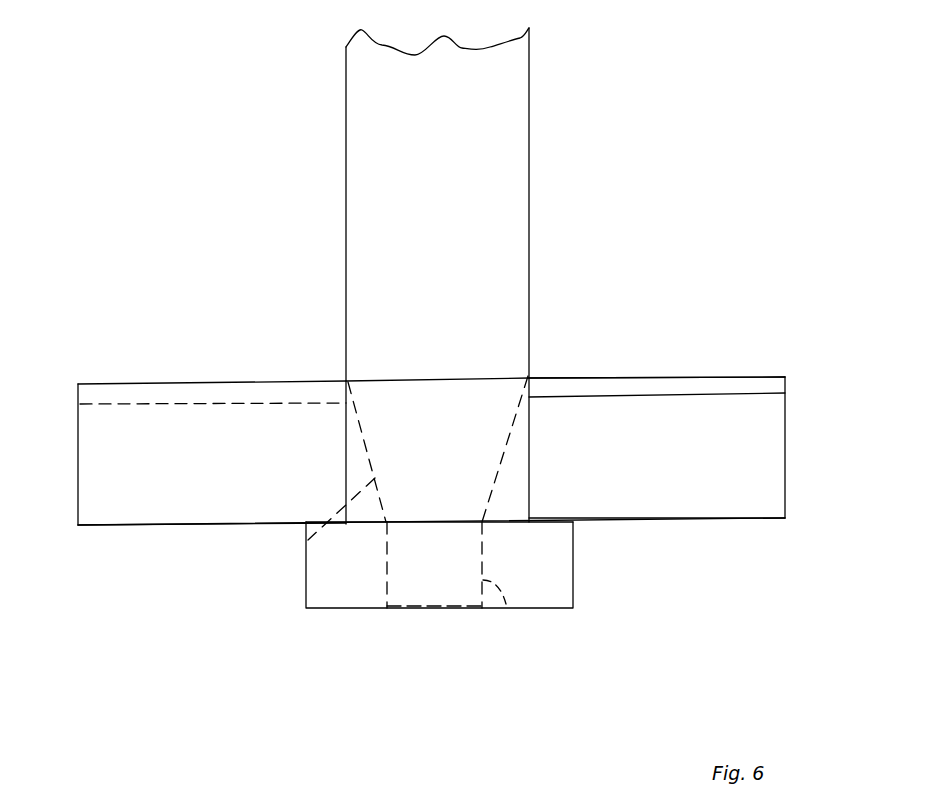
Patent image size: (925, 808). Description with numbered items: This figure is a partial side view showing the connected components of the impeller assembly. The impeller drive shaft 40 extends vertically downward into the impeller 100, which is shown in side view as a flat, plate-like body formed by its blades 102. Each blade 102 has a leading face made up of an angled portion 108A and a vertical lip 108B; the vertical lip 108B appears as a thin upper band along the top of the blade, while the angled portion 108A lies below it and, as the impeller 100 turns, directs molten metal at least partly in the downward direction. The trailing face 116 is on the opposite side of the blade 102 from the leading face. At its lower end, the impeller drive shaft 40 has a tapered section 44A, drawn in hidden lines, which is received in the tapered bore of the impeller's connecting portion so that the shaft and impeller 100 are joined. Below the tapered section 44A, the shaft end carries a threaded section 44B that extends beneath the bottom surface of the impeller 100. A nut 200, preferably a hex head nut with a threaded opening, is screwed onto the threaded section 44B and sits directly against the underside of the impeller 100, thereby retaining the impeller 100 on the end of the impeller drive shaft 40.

The impeller drive shaft 40 is at (529, 230).
The impeller 100 is at (825, 431).
The blade 102 is at (755, 376).
The angled portion 108A is at (710, 492).
The vertical lip 108B is at (786, 378).
The trailing face 116 is at (98, 453).
The tapered section 44A is at (307, 540).
The threaded section 44B is at (508, 610).
The nut 200 is at (576, 560).